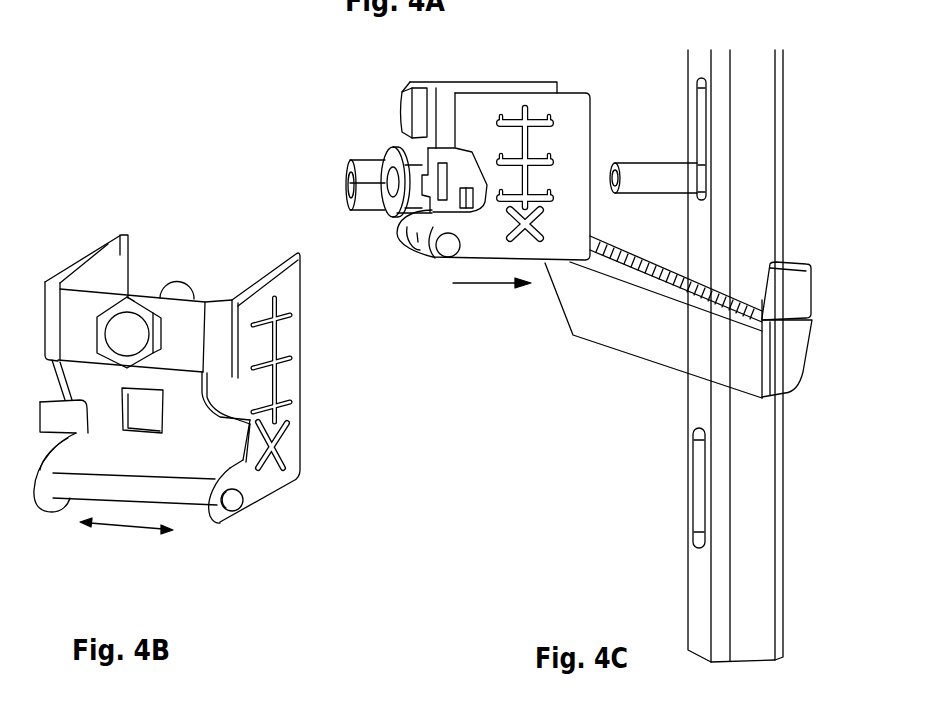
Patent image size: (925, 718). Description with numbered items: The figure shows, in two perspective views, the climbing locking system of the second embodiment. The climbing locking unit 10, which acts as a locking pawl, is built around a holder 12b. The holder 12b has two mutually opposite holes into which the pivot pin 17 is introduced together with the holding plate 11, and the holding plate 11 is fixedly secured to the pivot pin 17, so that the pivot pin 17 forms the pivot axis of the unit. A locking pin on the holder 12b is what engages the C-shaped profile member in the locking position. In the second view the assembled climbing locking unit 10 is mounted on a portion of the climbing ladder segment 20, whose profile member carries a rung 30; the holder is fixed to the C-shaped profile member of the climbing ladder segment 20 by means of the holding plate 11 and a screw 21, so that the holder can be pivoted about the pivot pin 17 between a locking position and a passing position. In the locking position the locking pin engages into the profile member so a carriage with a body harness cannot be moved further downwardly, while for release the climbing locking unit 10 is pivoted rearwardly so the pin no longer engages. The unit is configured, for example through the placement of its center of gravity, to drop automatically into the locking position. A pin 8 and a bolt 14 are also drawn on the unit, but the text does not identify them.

In FIG. 4C, the pin 8 is at (641, 148).
In FIG. 4B, the climbing locking unit 10 is at (301, 417).
In FIG. 4C, the climbing locking unit 10 is at (463, 77).
In FIG. 4B, the holding plate 11 is at (228, 437).
In FIG. 4C, the holder 12b is at (485, 255).
In FIG. 4C, the bolt 14 is at (357, 152).
In FIG. 4B, the pivot pin 17 is at (195, 504).
In FIG. 4C, the pivot pin 17 is at (412, 258).
In FIG. 4C, the climbing ladder segment 20 is at (762, 152).
In FIG. 4C, the screw 21 is at (662, 150).
In FIG. 4C, the rung 30 is at (630, 337).